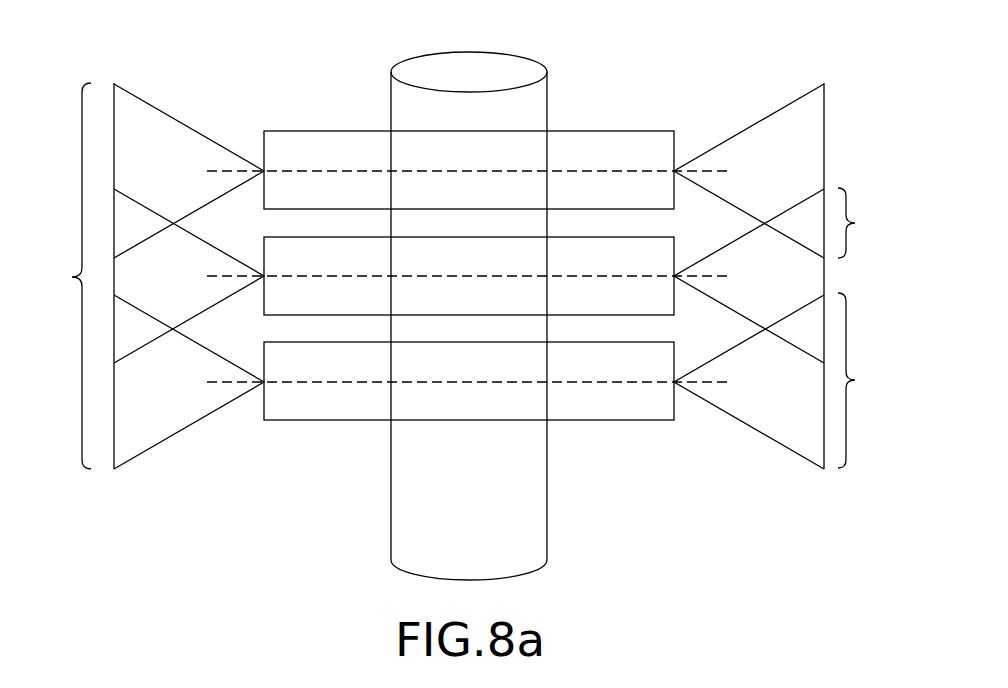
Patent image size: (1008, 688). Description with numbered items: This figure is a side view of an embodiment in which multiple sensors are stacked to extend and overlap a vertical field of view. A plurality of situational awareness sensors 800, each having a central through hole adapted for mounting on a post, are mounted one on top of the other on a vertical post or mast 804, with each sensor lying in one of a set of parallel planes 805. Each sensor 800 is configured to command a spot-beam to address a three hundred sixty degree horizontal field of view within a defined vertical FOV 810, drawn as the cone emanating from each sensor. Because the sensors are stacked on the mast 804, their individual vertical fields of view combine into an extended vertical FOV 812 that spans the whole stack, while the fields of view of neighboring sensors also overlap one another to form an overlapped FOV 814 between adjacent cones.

The situational awareness sensor 800 is at (620, 131).
The vertical post or mast 804 is at (531, 60).
The parallel plane 805 is at (714, 171).
The vertical FOV 810 is at (866, 380).
The extended vertical FOV 812 is at (145, 276).
The overlapped FOV 814 is at (866, 223).